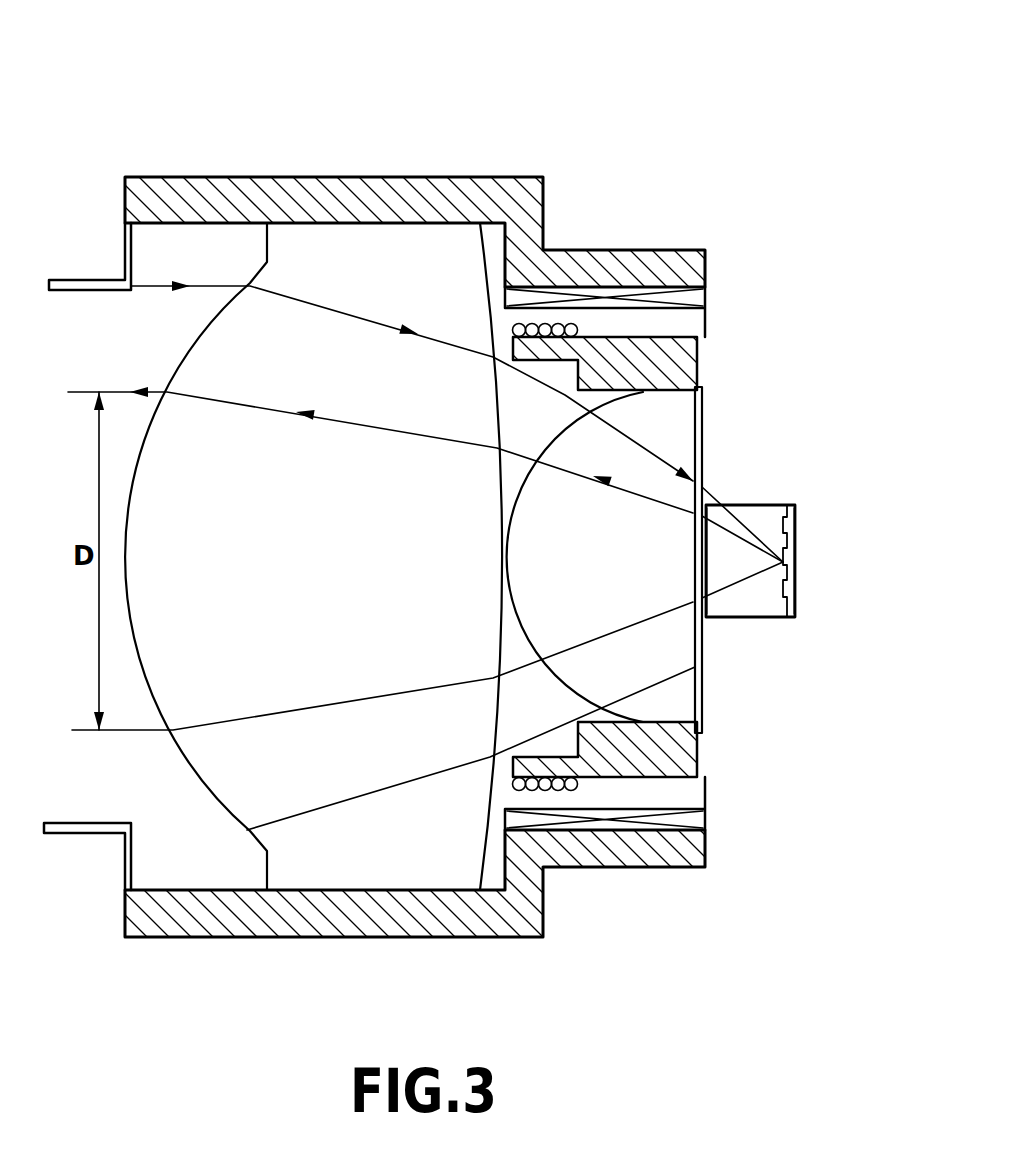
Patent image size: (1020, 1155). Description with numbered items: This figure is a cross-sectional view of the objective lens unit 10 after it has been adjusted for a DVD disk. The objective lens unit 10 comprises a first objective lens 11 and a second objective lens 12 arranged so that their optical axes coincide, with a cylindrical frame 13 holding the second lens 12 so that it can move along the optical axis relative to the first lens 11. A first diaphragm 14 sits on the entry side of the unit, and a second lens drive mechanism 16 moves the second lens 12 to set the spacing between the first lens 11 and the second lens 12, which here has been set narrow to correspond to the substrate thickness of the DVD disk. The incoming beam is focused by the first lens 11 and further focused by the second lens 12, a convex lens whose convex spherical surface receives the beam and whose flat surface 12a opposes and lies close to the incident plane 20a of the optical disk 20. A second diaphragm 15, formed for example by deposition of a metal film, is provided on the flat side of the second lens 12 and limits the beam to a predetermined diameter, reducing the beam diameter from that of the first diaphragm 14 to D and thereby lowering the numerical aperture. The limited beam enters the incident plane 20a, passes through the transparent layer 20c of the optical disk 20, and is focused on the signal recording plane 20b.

The objective lens unit 10 is at (715, 150).
The first objective lens 11 is at (190, 358).
The second objective lens 12 is at (627, 722).
The flat surface 12a is at (695, 538).
The cylindrical frame 13 is at (700, 360).
The first diaphragm 14 is at (83, 278).
The second diaphragm 15 is at (703, 420).
The second lens drive mechanism 16 is at (633, 328).
The optical disk 20 is at (799, 574).
The incident plane 20a is at (710, 600).
The signal recording plane 20b is at (795, 577).
The transparent layer 20c is at (770, 600).